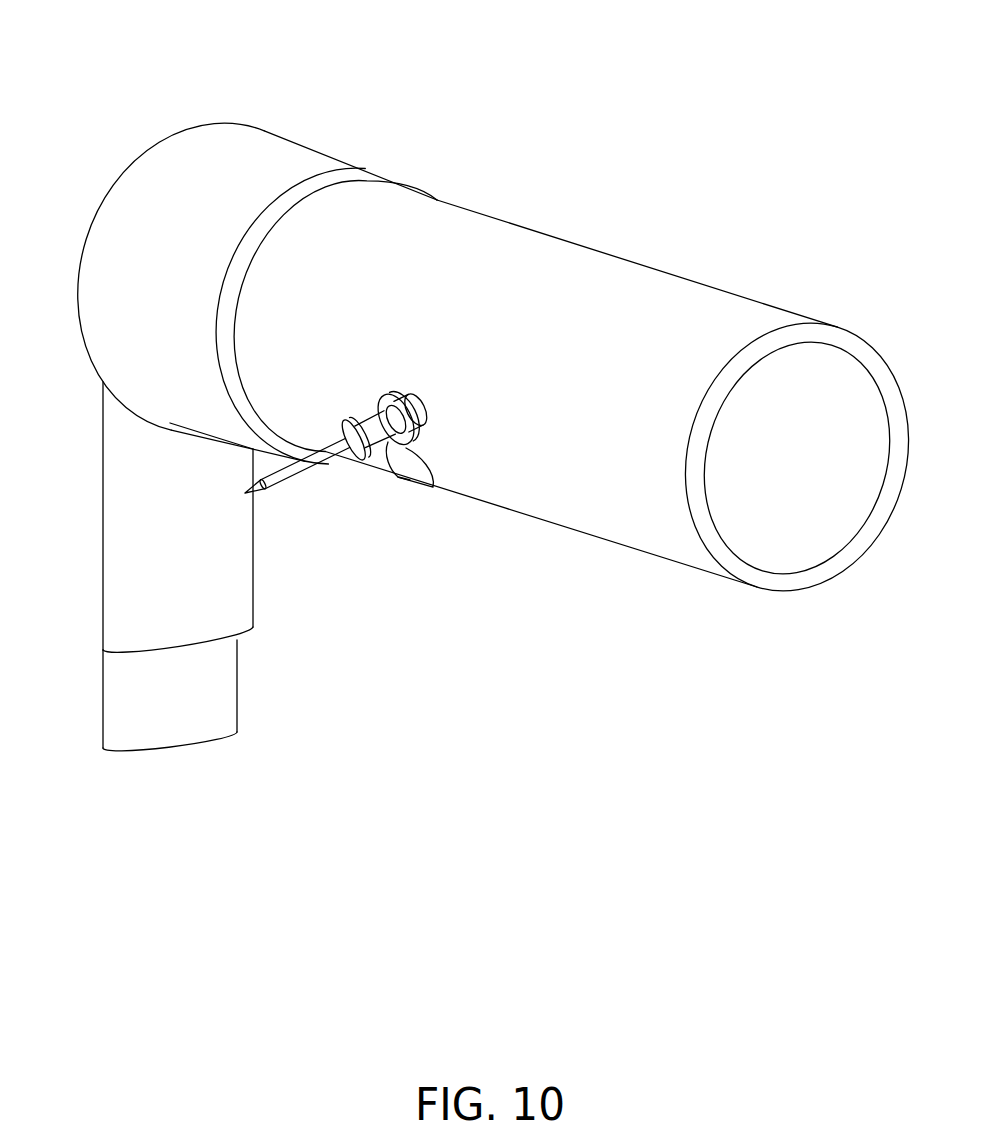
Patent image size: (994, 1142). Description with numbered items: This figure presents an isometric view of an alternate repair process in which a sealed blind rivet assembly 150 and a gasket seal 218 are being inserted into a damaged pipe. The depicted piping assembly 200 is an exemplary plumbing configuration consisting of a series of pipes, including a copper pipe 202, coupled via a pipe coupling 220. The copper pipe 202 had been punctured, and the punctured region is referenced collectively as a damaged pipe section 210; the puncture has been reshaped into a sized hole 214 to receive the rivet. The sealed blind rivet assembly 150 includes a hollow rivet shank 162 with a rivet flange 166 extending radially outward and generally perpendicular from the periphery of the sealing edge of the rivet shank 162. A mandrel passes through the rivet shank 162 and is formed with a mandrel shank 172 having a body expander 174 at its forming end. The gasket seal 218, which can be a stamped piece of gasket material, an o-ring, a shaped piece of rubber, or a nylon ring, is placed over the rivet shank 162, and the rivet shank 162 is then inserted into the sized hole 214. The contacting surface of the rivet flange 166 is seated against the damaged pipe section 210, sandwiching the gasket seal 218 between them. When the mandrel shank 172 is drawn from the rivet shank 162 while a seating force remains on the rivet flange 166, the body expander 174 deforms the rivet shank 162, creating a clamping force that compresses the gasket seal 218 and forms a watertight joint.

The piping assembly 200 is at (244, 77).
The damaged pipe section 210 is at (521, 270).
The pipe coupling 220 is at (105, 340).
The copper pipe 202 is at (228, 693).
The sealed blind rivet assembly 150 is at (338, 452).
The rivet shank 162 is at (369, 433).
The rivet flange 166 is at (304, 464).
The mandrel shank 172 is at (254, 489).
The body expander 174 is at (399, 418).
The sized hole 214 is at (433, 486).
The gasket seal 218 is at (398, 475).